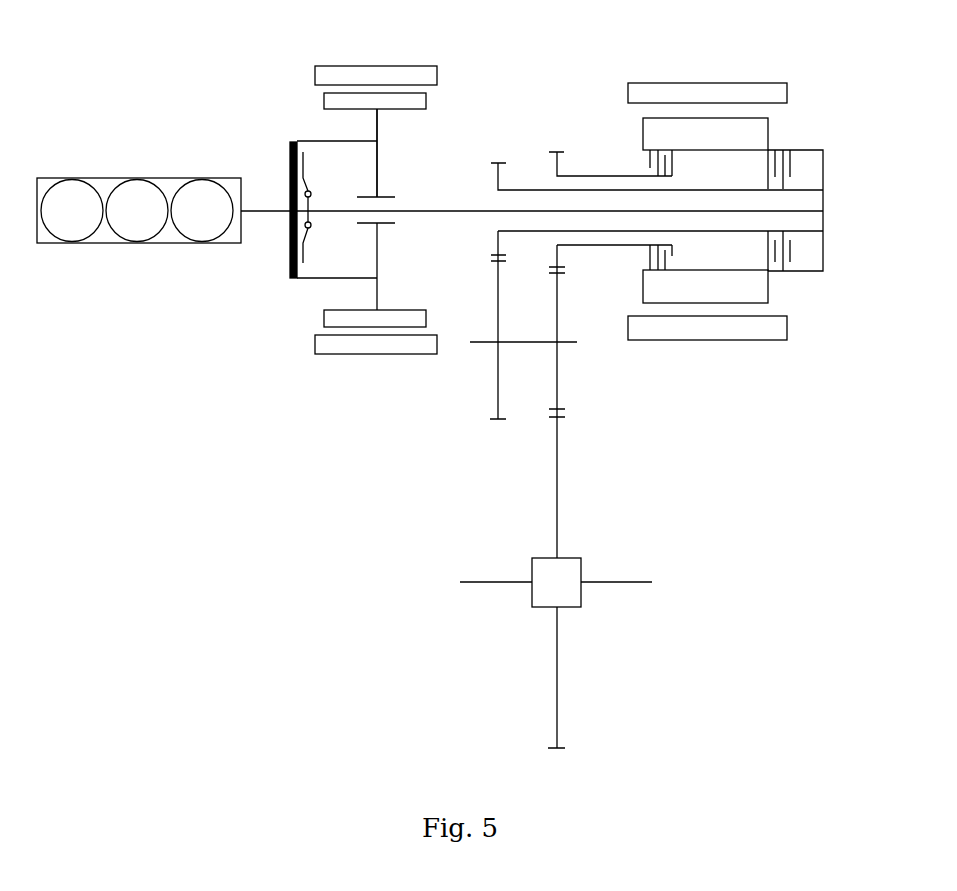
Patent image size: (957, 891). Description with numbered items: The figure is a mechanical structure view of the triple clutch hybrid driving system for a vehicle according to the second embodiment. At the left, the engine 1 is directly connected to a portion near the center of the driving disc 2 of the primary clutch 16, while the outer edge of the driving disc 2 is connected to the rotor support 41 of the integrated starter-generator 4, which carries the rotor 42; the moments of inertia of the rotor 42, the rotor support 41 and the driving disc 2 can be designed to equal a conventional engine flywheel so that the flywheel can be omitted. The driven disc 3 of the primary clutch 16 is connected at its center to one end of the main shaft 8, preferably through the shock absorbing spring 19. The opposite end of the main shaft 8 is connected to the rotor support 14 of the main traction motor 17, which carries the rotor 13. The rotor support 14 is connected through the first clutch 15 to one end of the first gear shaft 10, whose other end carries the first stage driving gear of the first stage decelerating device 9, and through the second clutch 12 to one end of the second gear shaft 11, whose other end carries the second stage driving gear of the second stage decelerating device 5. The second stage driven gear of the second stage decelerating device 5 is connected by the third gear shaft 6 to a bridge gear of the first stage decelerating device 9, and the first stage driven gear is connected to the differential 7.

The engine 1 is at (135, 243).
The driving disc of primary clutch 2 is at (288, 245).
The driven disc of primary clutch 3 is at (303, 255).
The integrated starter-generator 4 is at (376, 65).
The rotor support of integrated starter-generator 41 is at (377, 162).
The rotor of integrated starter-generator 42 is at (325, 317).
The second stage decelerating device 5 is at (497, 160).
The third gear shaft 6 is at (470, 342).
The differential 7 is at (531, 585).
The main shaft 8 is at (418, 208).
The first stage decelerating device 9 is at (565, 750).
The first gear shaft 10 is at (575, 245).
The second gear shaft 11 is at (713, 232).
The second clutch 12 is at (768, 242).
The rotor of main traction motor 13 is at (768, 131).
The rotor support of main traction motor 14 is at (825, 150).
The first clutch 15 is at (675, 248).
The primary clutch 16 is at (329, 138).
The main traction motor 17 is at (706, 83).
The shock absorbing spring 19 is at (312, 192).